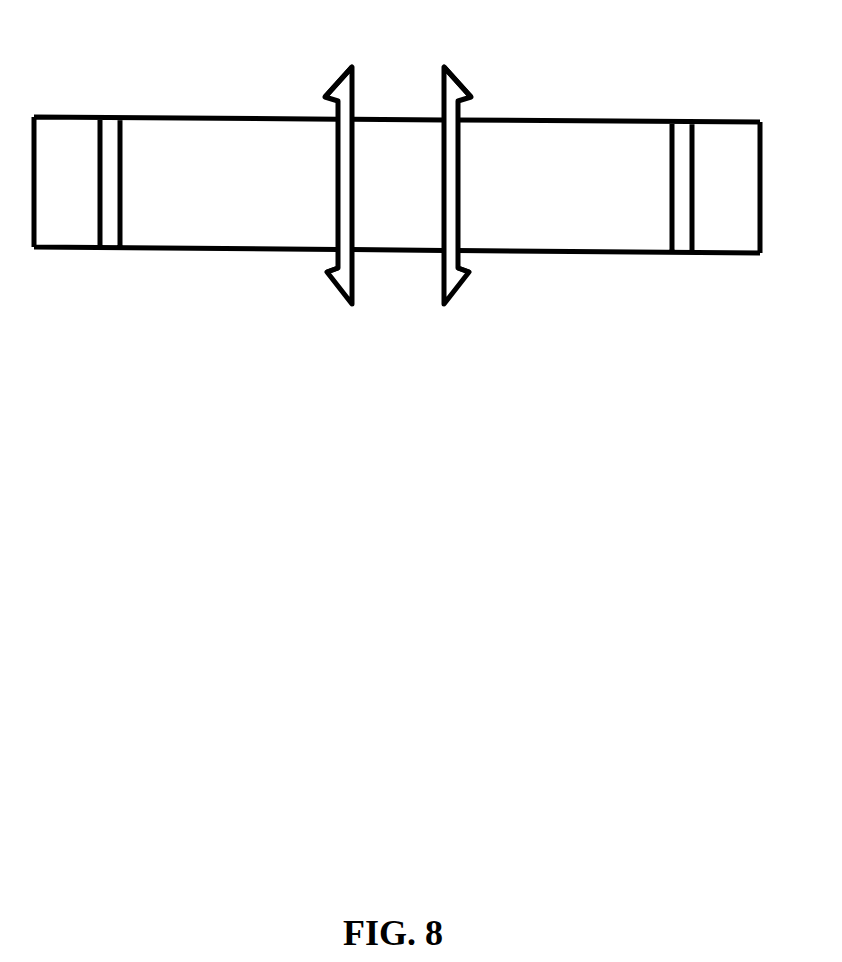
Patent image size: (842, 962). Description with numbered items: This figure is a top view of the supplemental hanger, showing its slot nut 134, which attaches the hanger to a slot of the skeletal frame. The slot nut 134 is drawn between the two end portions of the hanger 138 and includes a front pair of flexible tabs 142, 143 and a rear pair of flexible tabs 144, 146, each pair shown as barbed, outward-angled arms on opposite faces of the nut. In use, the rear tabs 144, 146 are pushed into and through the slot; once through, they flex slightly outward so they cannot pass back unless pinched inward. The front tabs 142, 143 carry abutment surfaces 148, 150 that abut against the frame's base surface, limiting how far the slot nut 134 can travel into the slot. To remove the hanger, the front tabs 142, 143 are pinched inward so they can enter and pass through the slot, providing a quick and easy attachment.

The slot nut 134 is at (392, 235).
The end member 138 is at (213, 240).
The front flexible tab 142 is at (345, 303).
The front flexible tab 143 is at (456, 285).
The rear flexible tab 144 is at (452, 88).
The upper barb of first clip 146 is at (343, 70).
The abutment surface 148 is at (328, 262).
The abutment surface 150 is at (458, 273).